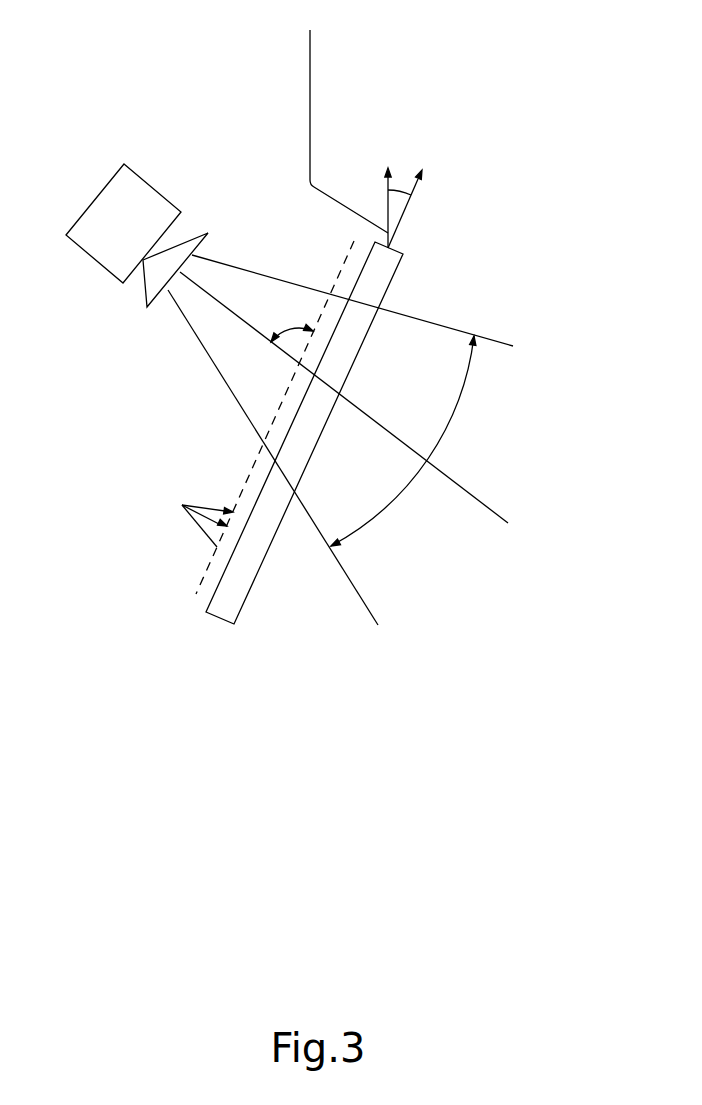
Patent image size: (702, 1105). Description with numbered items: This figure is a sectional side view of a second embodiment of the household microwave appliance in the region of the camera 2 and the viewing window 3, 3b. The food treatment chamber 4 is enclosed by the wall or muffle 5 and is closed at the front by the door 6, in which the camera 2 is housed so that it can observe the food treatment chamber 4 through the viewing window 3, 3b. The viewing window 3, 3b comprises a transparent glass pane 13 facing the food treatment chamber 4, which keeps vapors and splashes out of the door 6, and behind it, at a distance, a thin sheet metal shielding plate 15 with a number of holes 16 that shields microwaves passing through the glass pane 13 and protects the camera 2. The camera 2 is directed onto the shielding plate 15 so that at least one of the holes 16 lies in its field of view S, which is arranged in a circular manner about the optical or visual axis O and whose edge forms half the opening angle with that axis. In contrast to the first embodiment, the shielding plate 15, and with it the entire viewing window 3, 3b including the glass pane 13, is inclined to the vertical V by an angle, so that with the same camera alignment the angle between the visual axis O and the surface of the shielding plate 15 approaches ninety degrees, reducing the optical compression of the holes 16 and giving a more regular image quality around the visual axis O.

The camera 2 is at (105, 217).
The viewing window 3 is at (437, 283).
The viewing window 3b is at (380, 421).
The food treatment chamber 4 is at (496, 90).
The wall or muffle 5 is at (312, 55).
The door 6 is at (186, 90).
The glass pane 13 is at (380, 462).
The shielding plate 15 is at (205, 575).
The holes 16 is at (190, 513).
The vertical V is at (383, 212).
The field of view S is at (203, 346).
The optical axis or visual axis O is at (478, 496).